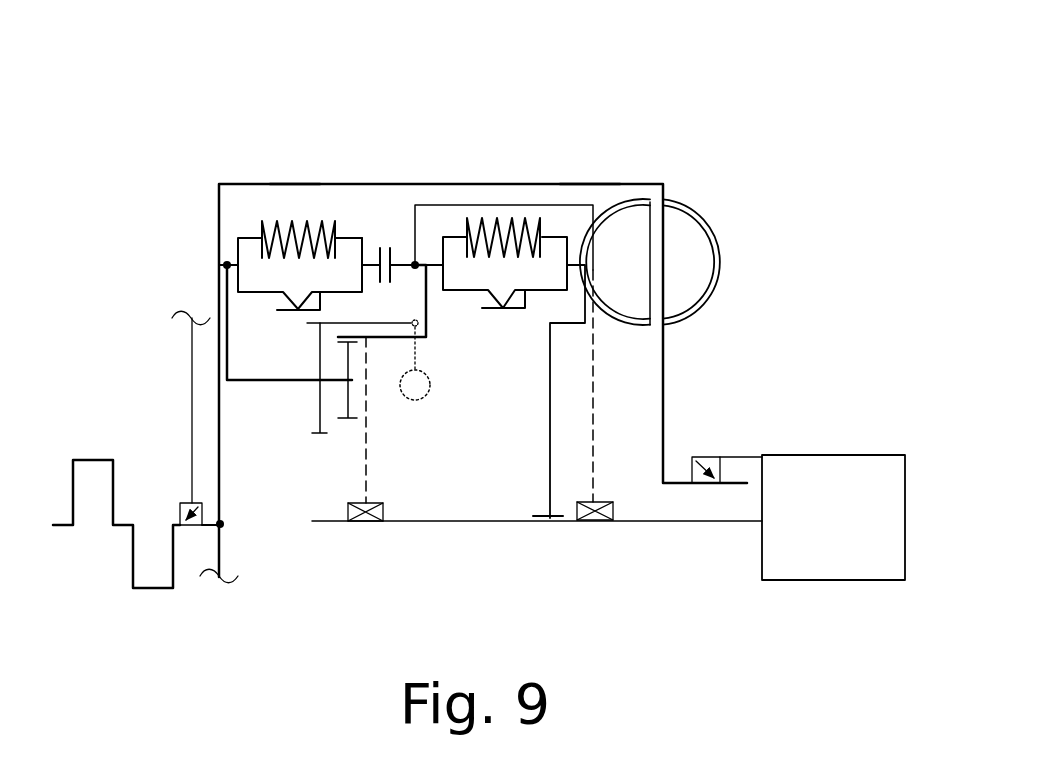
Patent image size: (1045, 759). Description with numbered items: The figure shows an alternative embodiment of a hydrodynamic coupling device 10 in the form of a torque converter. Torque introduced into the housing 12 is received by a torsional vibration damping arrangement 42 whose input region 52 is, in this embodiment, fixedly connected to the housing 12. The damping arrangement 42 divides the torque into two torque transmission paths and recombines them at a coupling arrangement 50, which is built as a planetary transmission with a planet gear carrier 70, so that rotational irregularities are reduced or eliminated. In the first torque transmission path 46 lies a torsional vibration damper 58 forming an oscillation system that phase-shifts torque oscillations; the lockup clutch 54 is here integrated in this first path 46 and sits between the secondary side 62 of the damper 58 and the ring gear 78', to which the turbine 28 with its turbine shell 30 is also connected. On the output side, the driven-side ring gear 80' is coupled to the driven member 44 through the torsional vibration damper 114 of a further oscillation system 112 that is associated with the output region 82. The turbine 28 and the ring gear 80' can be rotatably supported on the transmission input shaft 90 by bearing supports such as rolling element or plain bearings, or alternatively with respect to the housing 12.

The hydrodynamic coupling device 10 is at (679, 111).
The housing 12 is at (218, 184).
The turbine 28 is at (643, 202).
The turbine shell 30 is at (524, 204).
The torsional vibration damping arrangement 42 is at (272, 203).
The driven member 44 is at (547, 523).
The first torque transmission path 46 is at (323, 203).
The coupling arrangement 50 is at (291, 442).
The input region 52 is at (226, 261).
The lockup clutch 54 is at (391, 248).
The torsional vibration damper 58 is at (293, 178).
The secondary side 62 is at (359, 236).
The planet gear carrier 70 is at (226, 357).
The ring gear 78' is at (273, 349).
The ring gear 80' is at (411, 448).
The output region 82 is at (500, 357).
The transmission input shaft 90 is at (723, 523).
The further oscillation system 112 is at (582, 170).
The torsional vibration damper 114 is at (496, 210).